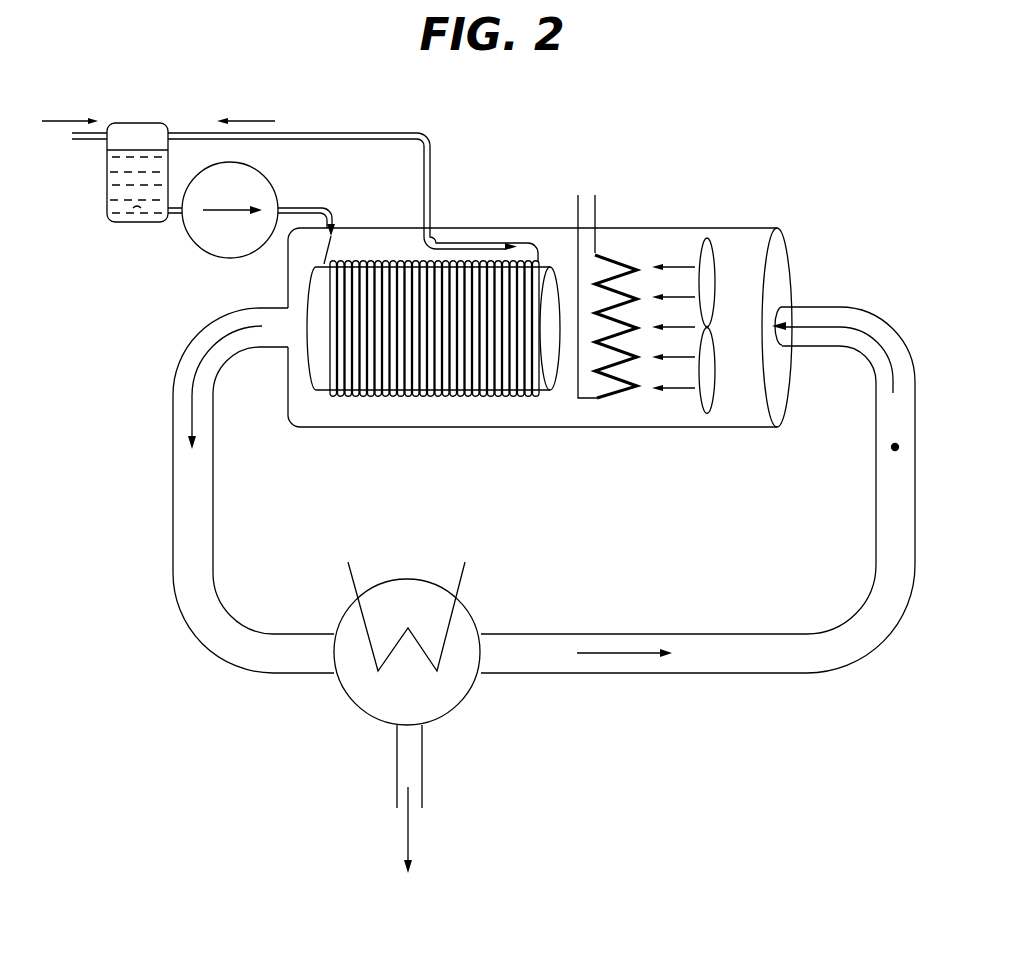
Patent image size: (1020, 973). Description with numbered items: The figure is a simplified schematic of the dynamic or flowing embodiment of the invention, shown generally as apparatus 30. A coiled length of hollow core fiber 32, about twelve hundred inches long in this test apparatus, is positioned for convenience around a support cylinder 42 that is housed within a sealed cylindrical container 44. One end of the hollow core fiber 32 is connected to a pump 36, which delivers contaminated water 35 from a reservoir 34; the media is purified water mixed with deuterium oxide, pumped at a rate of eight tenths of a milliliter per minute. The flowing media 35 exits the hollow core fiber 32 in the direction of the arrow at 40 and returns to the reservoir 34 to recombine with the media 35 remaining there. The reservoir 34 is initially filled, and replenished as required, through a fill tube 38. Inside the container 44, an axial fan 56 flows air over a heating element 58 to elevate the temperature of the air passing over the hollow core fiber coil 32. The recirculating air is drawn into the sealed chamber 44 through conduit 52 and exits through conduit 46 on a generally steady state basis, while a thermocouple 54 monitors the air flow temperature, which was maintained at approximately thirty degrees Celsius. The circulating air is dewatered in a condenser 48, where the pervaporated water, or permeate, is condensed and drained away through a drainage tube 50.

The apparatus 30 is at (687, 156).
The hollow core fiber 32 is at (423, 397).
The reservoir 34 is at (107, 183).
The contaminated water 35 is at (137, 210).
The pump 36 is at (224, 258).
The fill tube 38 is at (93, 140).
The arrow 40 is at (177, 133).
The support cylinder 42 is at (563, 397).
The sealed cylindrical container 44 is at (678, 428).
The conduit 46 is at (215, 500).
The condenser 48 is at (457, 708).
The drainage tube 50 is at (397, 783).
The conduit 52 is at (875, 522).
The thermocouple 54 is at (893, 448).
The axial fan 56 is at (717, 278).
The heating element 58 is at (610, 253).